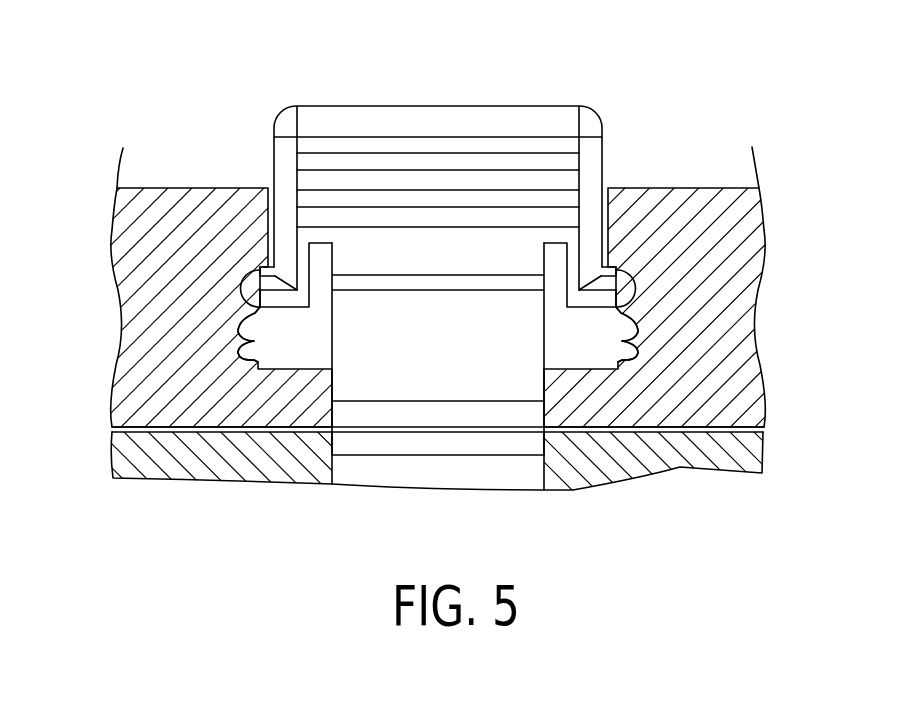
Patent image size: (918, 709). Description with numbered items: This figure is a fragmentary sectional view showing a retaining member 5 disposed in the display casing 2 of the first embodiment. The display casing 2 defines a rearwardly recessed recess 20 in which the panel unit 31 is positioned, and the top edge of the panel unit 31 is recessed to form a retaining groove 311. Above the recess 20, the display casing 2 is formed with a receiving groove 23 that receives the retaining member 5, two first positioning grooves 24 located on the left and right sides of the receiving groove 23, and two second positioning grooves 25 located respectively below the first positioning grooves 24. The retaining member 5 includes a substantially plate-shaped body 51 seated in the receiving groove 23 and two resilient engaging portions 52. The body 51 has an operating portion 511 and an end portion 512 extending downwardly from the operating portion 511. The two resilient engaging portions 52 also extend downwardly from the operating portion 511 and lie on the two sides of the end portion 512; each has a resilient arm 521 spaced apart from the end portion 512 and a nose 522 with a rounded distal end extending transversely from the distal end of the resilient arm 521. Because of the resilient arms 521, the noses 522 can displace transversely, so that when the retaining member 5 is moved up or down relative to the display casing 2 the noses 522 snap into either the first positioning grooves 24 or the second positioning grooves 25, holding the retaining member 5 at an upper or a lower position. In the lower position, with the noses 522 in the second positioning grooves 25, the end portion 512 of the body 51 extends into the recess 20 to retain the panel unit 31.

The display casing 2 is at (704, 191).
The recess 20 is at (723, 427).
The receiving groove 23 is at (298, 350).
The first positioning grooves 24 is at (246, 303).
The second positioning grooves 25 is at (254, 346).
The panel unit 31 is at (283, 463).
The retaining groove 311 is at (393, 448).
The retaining member 5 is at (444, 277).
The body 51 is at (485, 100).
The operating portion 511 is at (522, 148).
The end portion 512 is at (428, 348).
The resilient engaging portions 52 is at (444, 206).
The resilient arm 521 is at (268, 262).
The nose 522 is at (280, 285).